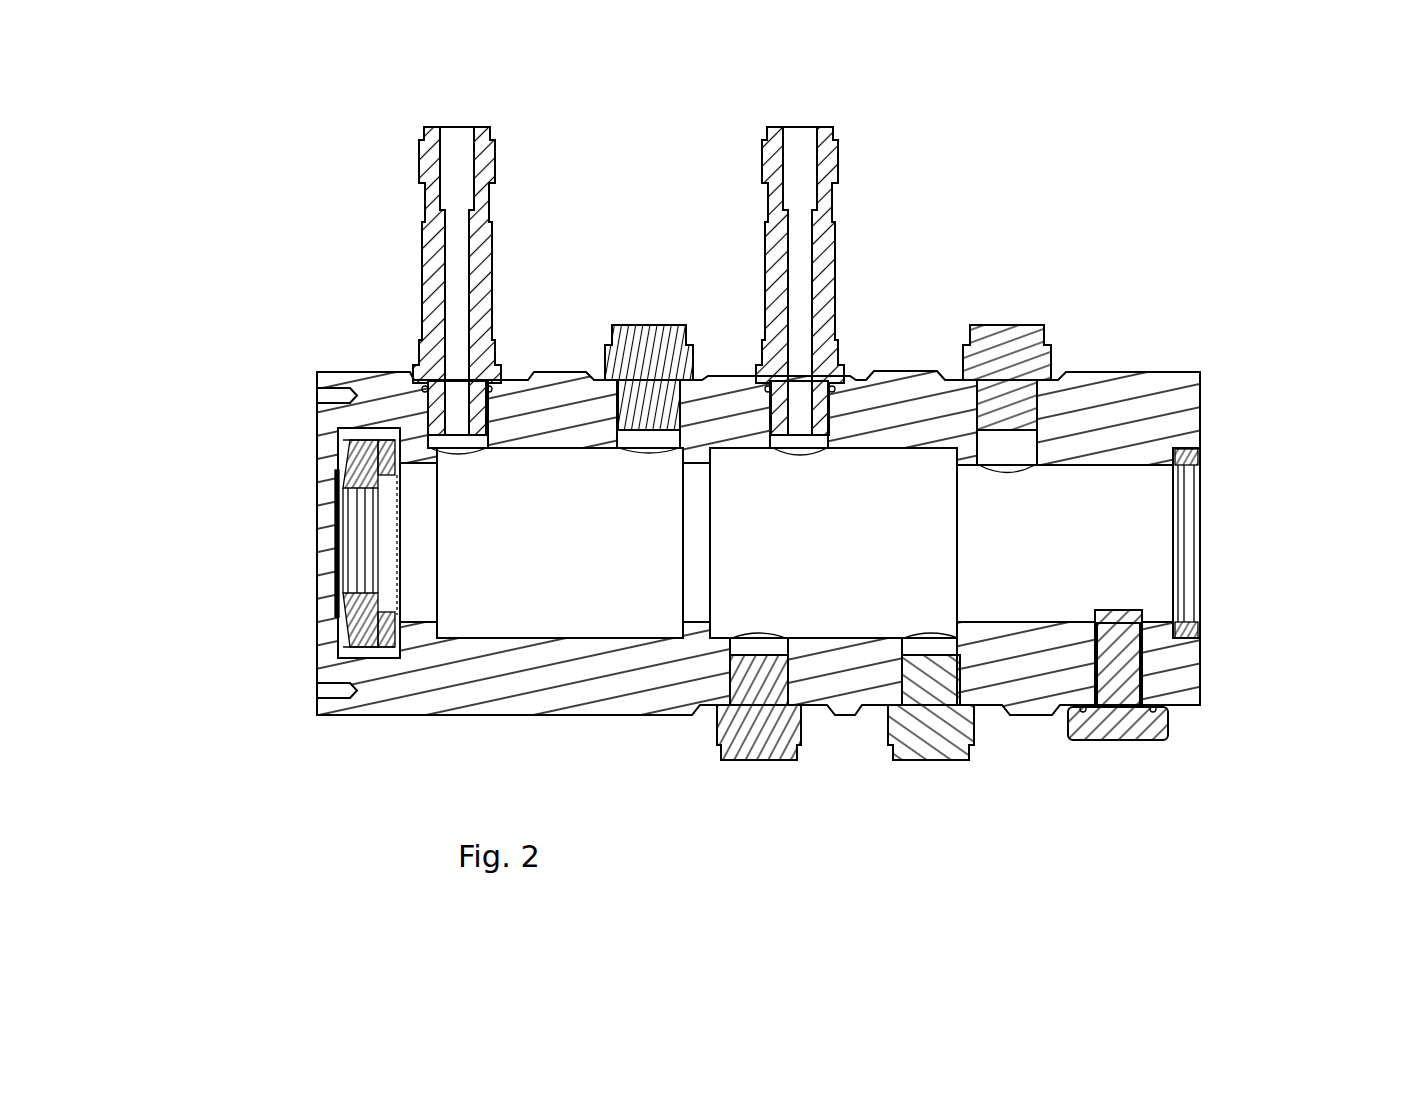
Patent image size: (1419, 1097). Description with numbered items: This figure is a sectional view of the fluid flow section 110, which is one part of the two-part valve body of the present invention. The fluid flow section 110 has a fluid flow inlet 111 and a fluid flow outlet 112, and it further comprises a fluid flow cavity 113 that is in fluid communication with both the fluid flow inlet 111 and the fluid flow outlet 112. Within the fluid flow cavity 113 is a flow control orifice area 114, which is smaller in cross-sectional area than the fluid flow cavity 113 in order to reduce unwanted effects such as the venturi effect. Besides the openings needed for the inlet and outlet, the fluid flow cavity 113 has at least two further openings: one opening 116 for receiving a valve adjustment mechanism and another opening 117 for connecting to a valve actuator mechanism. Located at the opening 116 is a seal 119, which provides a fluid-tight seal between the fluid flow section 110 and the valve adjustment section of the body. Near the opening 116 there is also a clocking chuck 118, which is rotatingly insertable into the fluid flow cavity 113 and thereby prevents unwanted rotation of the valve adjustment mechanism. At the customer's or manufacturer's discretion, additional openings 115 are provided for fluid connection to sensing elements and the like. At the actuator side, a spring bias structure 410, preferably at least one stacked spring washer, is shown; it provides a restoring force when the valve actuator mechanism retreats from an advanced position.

The fluid flow section 110 is at (445, 770).
The fluid flow inlet 111 is at (477, 247).
The fluid flow outlet 112 is at (822, 235).
The fluid flow cavity 113 is at (520, 525).
The flow control orifice area 114 is at (690, 465).
The additional openings 115 is at (645, 325).
The opening for receiving a valve adjustment mechanism 116 is at (1215, 510).
The opening for connecting to a valve actuator mechanism 117 is at (296, 536).
The clocking chuck 118 is at (1110, 743).
The seal 119 is at (1197, 630).
The spring bias structure 410 is at (345, 633).